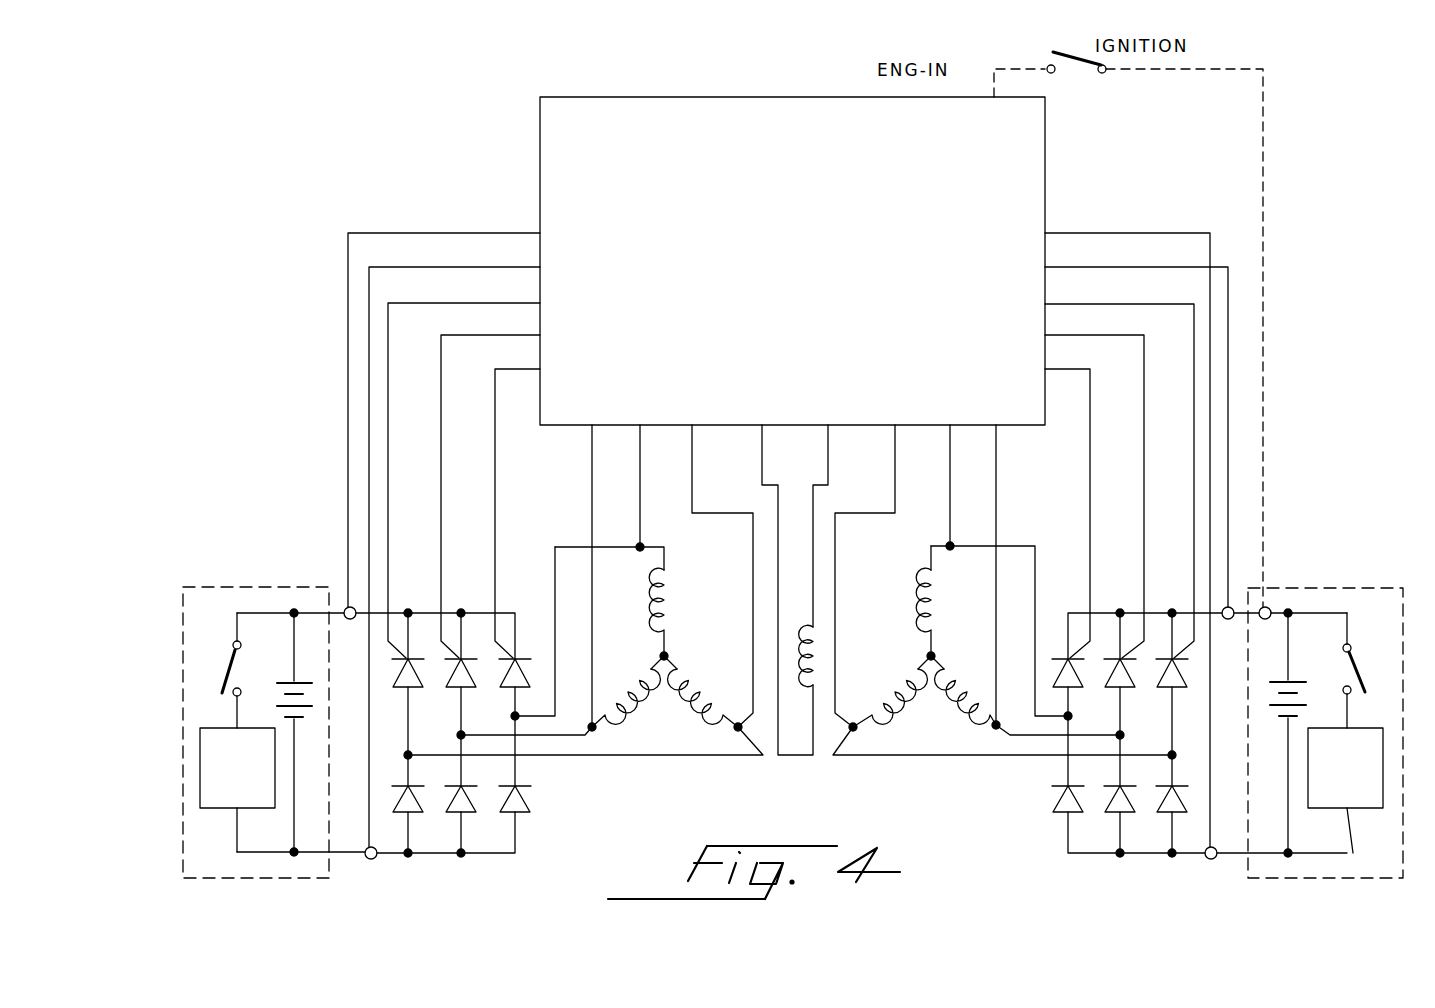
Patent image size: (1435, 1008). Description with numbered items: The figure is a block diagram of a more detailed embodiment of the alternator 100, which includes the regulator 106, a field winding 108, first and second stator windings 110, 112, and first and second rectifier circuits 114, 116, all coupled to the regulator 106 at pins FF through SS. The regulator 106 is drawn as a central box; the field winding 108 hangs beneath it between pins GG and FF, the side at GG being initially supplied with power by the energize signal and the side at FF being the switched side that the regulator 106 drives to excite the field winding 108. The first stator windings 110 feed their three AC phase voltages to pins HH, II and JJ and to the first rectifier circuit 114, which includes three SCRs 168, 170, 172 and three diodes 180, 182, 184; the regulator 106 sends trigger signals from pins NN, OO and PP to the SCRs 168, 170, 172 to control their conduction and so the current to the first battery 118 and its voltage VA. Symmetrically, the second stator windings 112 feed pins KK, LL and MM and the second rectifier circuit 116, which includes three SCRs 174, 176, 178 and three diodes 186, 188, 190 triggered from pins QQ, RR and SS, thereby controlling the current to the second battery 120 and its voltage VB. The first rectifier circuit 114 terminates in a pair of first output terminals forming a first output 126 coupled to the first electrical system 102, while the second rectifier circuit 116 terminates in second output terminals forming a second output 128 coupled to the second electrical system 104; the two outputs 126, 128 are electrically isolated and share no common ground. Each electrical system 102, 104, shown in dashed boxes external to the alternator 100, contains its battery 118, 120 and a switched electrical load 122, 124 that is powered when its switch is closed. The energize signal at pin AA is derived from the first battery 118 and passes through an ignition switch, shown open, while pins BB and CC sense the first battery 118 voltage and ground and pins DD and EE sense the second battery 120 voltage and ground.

The alternator 100 is at (476, 131).
The first electrical system 102 is at (1324, 708).
The second electrical system 104 is at (274, 706).
The regulator 106 is at (806, 268).
The field winding 108 is at (801, 773).
The first stator windings 110 is at (906, 605).
The second stator windings 112 is at (689, 605).
The first rectifier circuit 114 is at (1119, 862).
The second rectifier circuit 116 is at (489, 858).
The first battery 118 is at (1296, 681).
The second battery 120 is at (288, 682).
The first switched electrical load 122 is at (1366, 797).
The second switched electrical load 124 is at (258, 797).
The first output 126 is at (1240, 546).
The second output 128 is at (339, 566).
The SCR 168 is at (1078, 700).
The SCR 170 is at (1130, 700).
The SCR 172 is at (1170, 698).
The SCR 174 is at (510, 694).
The SCR 176 is at (459, 698).
The SCR 178 is at (417, 700).
The diode 180 is at (1061, 815).
The diode 182 is at (1116, 816).
The diode 184 is at (1168, 816).
The diode 186 is at (523, 815).
The diode 188 is at (471, 814).
The diode 190 is at (417, 814).